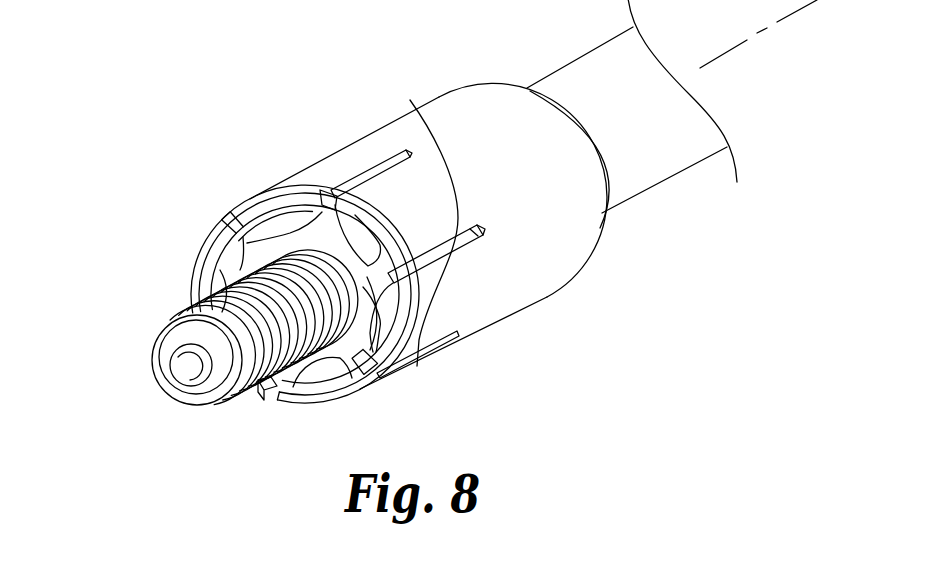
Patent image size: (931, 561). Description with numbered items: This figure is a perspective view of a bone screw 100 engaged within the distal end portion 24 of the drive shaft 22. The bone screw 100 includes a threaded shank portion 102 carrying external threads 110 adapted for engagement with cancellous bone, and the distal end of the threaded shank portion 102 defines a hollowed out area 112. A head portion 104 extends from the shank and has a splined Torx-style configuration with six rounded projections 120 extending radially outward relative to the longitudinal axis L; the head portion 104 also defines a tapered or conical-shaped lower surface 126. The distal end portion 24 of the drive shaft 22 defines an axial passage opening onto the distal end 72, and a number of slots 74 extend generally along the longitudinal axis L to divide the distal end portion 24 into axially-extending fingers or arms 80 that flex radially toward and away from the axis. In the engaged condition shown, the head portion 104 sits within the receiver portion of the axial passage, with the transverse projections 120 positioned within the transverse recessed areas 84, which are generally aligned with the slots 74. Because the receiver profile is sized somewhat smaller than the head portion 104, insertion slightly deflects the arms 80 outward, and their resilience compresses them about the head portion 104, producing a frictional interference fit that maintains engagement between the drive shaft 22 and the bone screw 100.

The drive shaft 22 is at (678, 200).
The distal end portion 24 is at (306, 132).
The distal end 72 is at (287, 405).
The slots 74 is at (407, 99).
The arms 80 is at (326, 157).
The recessed areas 84 is at (249, 236).
The bone screw 100 is at (147, 322).
The threaded shank portion 102 is at (228, 413).
The head portion 104 is at (281, 208).
The external threads 110 is at (218, 297).
The hollowed out area 112 is at (186, 366).
The projections 120 is at (228, 238).
The lower surface 126 is at (440, 342).
The longitudinal axis L is at (795, 13).